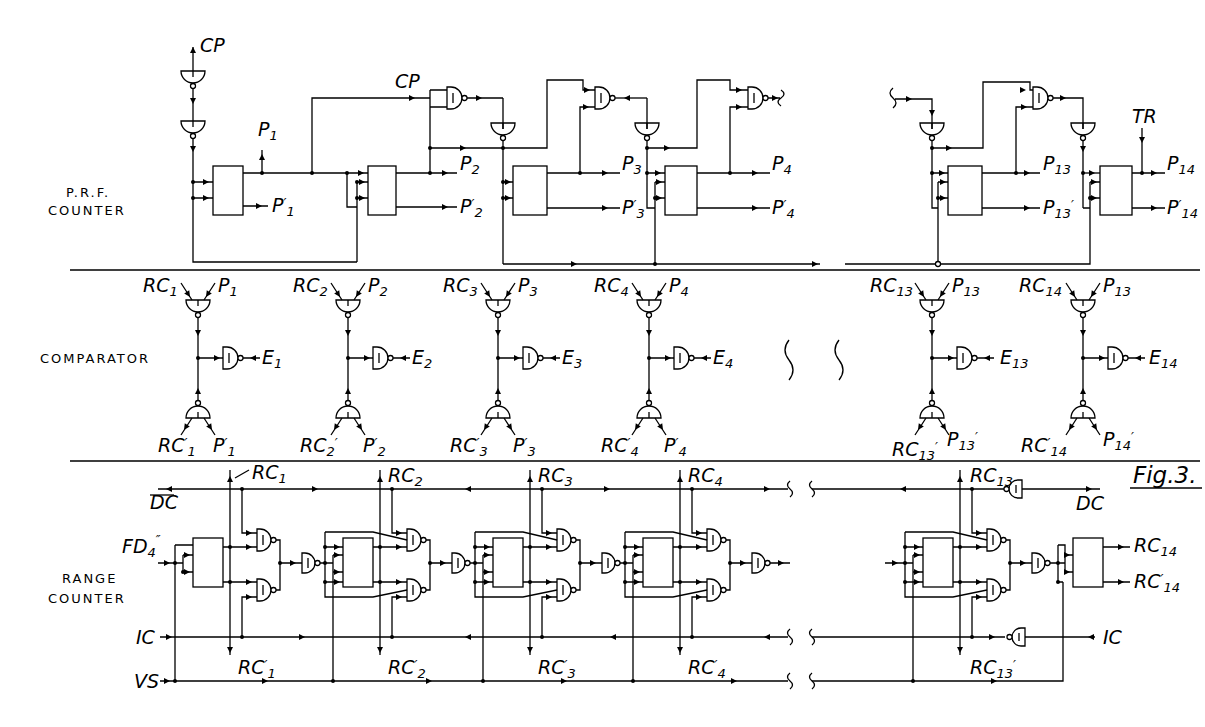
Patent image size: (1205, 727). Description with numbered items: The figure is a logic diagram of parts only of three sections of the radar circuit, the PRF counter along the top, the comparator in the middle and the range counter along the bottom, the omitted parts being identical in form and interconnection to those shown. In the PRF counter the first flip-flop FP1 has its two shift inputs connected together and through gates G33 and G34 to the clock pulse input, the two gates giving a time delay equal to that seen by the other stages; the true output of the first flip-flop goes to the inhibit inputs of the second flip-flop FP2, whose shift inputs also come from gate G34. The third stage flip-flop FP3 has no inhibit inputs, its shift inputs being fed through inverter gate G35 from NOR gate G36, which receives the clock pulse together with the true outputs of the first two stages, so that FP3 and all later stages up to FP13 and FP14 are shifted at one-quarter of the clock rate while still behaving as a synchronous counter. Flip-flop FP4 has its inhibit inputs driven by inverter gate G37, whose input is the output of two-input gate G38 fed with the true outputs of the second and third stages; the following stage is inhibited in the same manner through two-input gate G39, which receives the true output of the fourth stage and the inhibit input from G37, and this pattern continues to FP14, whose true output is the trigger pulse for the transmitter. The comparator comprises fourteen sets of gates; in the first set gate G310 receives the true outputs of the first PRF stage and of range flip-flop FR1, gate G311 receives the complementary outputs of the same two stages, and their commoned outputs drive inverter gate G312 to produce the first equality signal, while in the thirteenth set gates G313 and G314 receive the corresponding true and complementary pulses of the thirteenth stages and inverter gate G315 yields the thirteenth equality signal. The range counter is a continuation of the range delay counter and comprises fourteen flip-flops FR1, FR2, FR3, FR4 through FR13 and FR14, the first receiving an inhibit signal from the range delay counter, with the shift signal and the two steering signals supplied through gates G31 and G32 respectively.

The gate G33 is at (215, 68).
The gate G34 is at (215, 113).
The inverter gate G35 is at (483, 129).
The NOR gate G36 is at (477, 88).
The inverter gate G37 is at (665, 122).
The two-input gate G38 is at (624, 88).
The two-input gate G39 is at (777, 88).
The first flip-flop FP1 is at (230, 201).
The second flip-flop FP2 is at (383, 201).
The third stage flip-flop FP3 is at (530, 201).
The flip-flop FP4 is at (683, 201).
The flip-flop FP13 is at (972, 201).
The flip-flop FP14 is at (1123, 201).
The gate G310 is at (221, 306).
The second gate G311 is at (221, 411).
The inverter gate G312 is at (238, 348).
The gate G313 is at (955, 306).
The gate G314 is at (955, 411).
The invertor gate G315 is at (971, 348).
The flip-flop FR1 is at (210, 574).
The flip-flop FR2 is at (354, 582).
The flip-flop FR3 is at (504, 582).
The flip-flop FR4 is at (654, 582).
The flip-flop FR13 is at (934, 582).
The flip-flop FR14 is at (1097, 574).
The gate G31 is at (1034, 480).
The gate G32 is at (1032, 648).